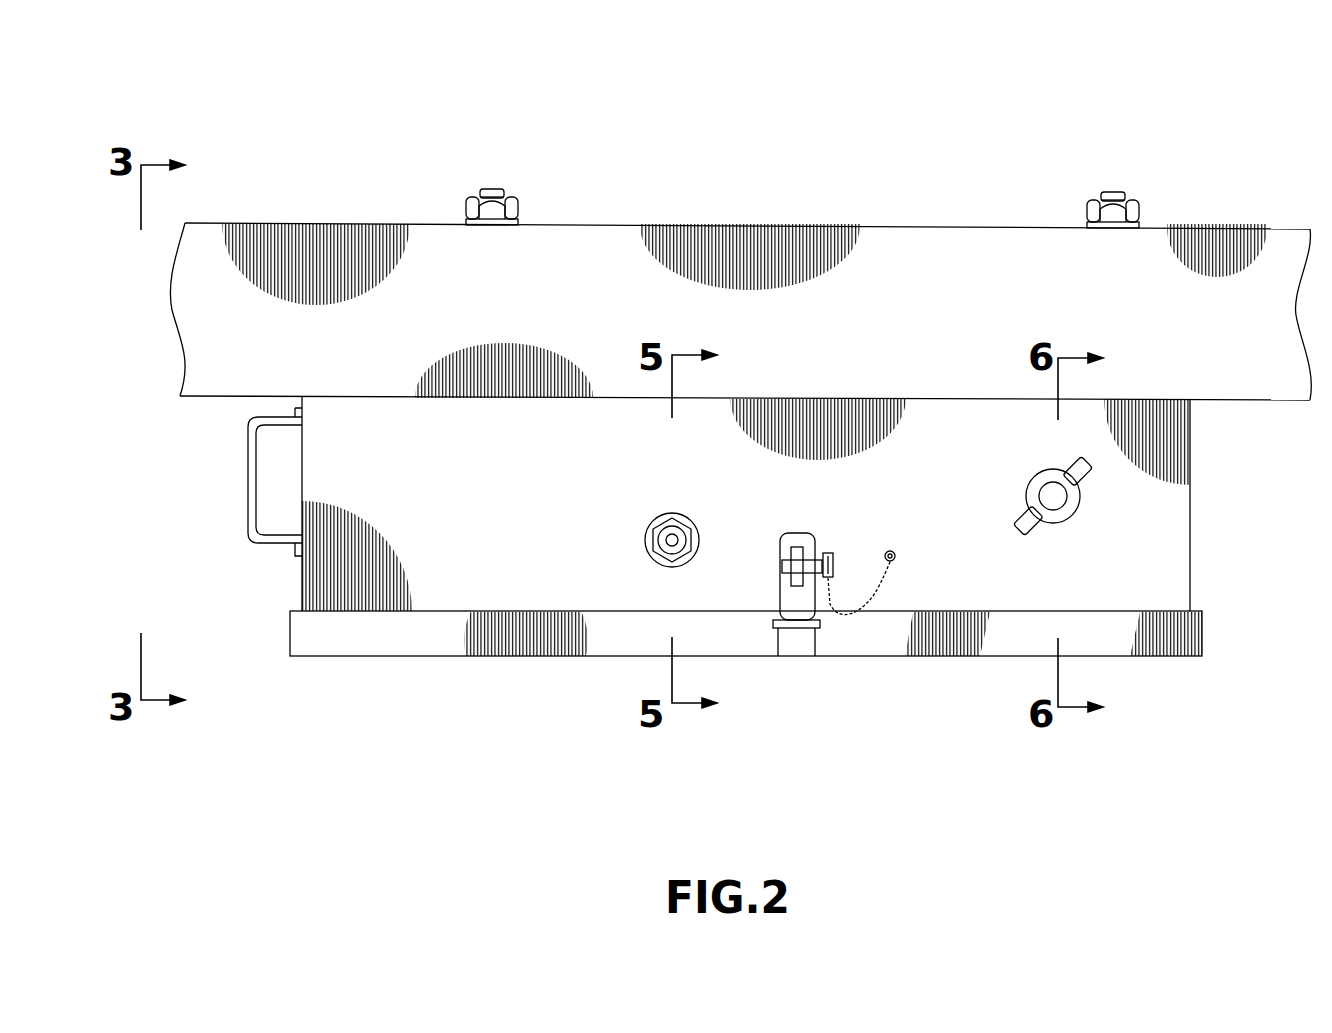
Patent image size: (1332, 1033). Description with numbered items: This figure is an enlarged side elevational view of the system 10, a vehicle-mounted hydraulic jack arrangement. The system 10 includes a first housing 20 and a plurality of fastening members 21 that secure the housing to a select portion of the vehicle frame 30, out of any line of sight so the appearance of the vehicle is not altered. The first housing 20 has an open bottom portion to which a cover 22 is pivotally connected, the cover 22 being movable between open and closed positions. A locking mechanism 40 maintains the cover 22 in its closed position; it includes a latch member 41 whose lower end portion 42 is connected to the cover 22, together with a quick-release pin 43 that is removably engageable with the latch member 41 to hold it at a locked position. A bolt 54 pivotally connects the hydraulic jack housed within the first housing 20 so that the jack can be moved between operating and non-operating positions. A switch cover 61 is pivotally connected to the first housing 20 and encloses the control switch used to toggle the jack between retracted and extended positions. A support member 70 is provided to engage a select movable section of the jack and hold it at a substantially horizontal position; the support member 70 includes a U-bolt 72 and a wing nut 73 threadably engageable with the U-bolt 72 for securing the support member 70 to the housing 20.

The system 10 is at (355, 126).
The first housing 20 is at (318, 570).
The fastening members 21 is at (500, 192).
The cover 22 is at (336, 645).
The frame 30 is at (888, 240).
The locking mechanism 40 is at (817, 657).
The latch member 41 is at (787, 585).
The lower end portion 42 is at (788, 637).
The quick-release pin 43 is at (833, 572).
The bolt 54 is at (667, 542).
The switch cover 61 is at (258, 457).
The support member 70 is at (1055, 497).
The U-bolt 72 is at (1065, 512).
The wing nut 73 is at (1076, 468).